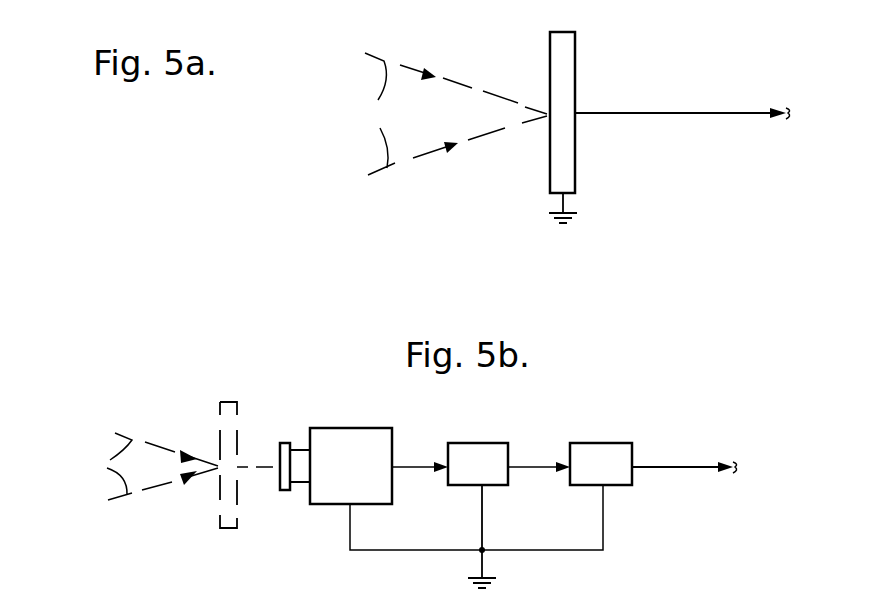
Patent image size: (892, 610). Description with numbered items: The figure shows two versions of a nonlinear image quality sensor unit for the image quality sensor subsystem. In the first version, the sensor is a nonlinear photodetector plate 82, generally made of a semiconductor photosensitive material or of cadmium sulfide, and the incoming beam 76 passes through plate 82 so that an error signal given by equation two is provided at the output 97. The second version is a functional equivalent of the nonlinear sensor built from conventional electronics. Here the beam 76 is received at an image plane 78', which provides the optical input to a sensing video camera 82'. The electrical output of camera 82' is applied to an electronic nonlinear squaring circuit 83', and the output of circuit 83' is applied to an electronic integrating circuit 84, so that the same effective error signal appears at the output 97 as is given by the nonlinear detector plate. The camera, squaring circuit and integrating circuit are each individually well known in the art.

In FIG. 5A, the beam 76 is at (456, 114).
In FIG. 5B, the beam 76 is at (149, 466).
In FIG. 5A, the nonlinear photodetector plate 82 is at (587, 123).
In FIG. 5A, the error signal output 97 is at (680, 113).
In FIG. 5B, the error signal output 97 is at (675, 468).
In FIG. 5B, the image plane 78' is at (253, 456).
In FIG. 5B, the sensing video camera 82' is at (381, 489).
In FIG. 5B, the electronic nonlinear squaring circuit 83' is at (450, 515).
In FIG. 5B, the electronic integrating circuit 84 is at (630, 445).